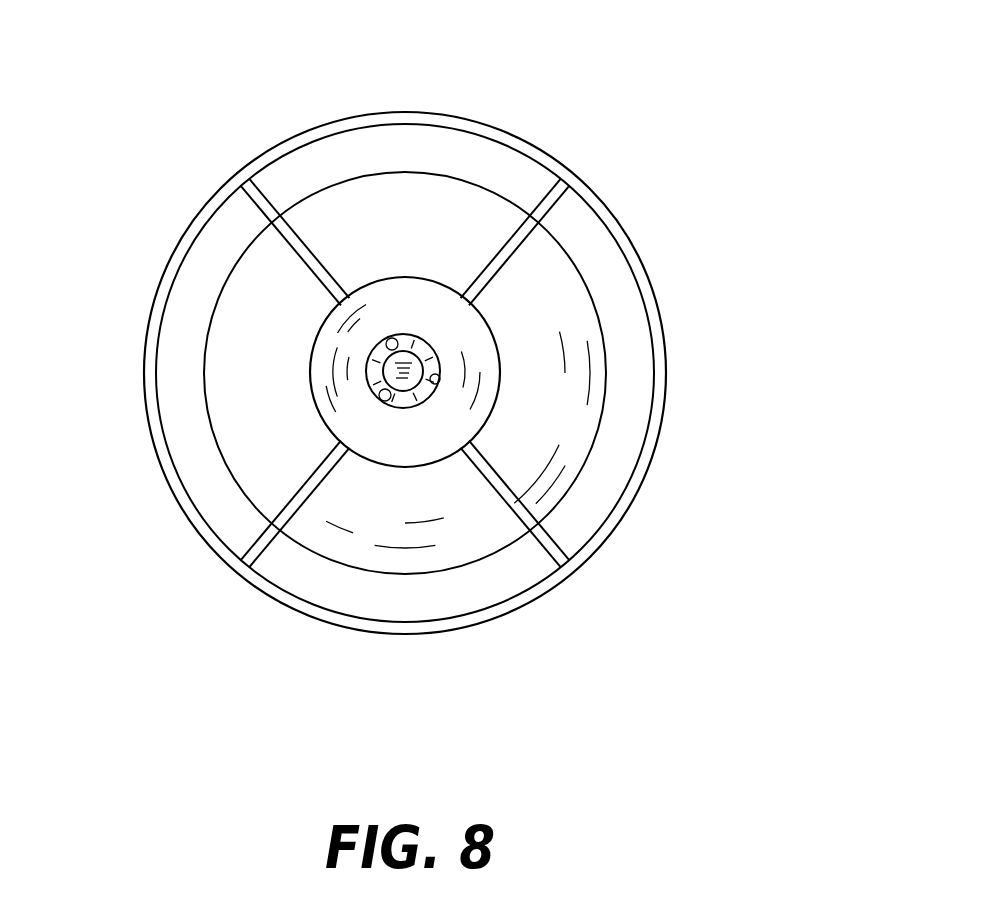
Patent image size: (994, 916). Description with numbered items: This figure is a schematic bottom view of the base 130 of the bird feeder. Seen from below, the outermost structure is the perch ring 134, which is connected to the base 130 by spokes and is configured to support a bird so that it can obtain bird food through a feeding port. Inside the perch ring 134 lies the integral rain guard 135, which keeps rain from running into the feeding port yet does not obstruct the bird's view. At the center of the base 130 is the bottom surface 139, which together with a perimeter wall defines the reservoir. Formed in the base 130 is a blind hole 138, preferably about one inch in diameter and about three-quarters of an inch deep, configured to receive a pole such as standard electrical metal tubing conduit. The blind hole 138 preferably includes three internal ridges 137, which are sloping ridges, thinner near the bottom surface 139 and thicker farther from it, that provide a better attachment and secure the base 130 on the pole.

The base 130 is at (730, 90).
The perch ring 134 is at (665, 318).
The rain guard 135 is at (228, 382).
The internal ridges 137 is at (389, 338).
The blind hole 138 is at (416, 335).
The bottom surface 139 is at (427, 448).